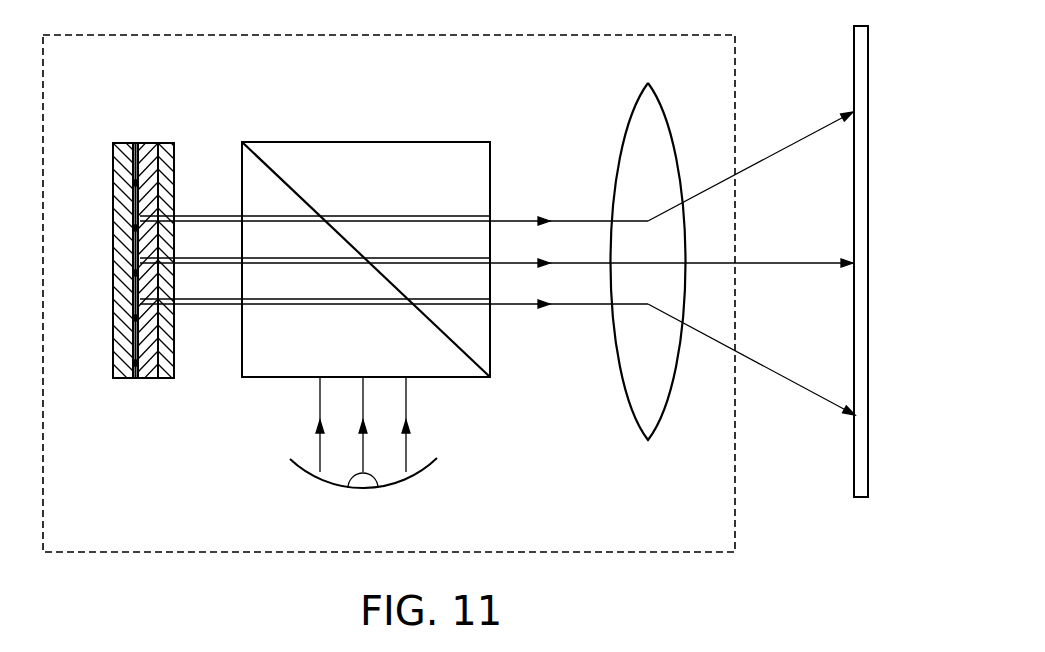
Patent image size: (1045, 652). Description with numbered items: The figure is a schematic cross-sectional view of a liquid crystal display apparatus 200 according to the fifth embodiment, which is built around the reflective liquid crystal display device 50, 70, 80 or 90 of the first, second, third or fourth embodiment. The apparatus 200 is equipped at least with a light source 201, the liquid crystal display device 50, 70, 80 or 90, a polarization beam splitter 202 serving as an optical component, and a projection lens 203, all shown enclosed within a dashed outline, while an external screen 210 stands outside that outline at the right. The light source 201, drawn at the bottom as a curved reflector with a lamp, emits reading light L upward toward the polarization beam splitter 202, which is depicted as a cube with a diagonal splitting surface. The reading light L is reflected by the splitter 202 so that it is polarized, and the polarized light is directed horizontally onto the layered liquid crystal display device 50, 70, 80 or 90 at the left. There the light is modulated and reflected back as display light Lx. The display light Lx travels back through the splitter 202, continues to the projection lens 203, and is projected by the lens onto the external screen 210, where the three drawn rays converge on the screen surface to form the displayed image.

The liquid crystal display apparatus 200 is at (680, 20).
The liquid crystal display device 50 is at (155, 278).
The liquid crystal display device 70 is at (123, 257).
The liquid crystal display device 80 is at (145, 257).
The liquid crystal display device 90 is at (174, 385).
The light source 201 is at (413, 478).
The polarization beam splitter 202 is at (467, 380).
The projection lens 203 is at (648, 440).
The external screen 210 is at (860, 497).
The reading light L is at (347, 424).
The display light Lx is at (497, 263).